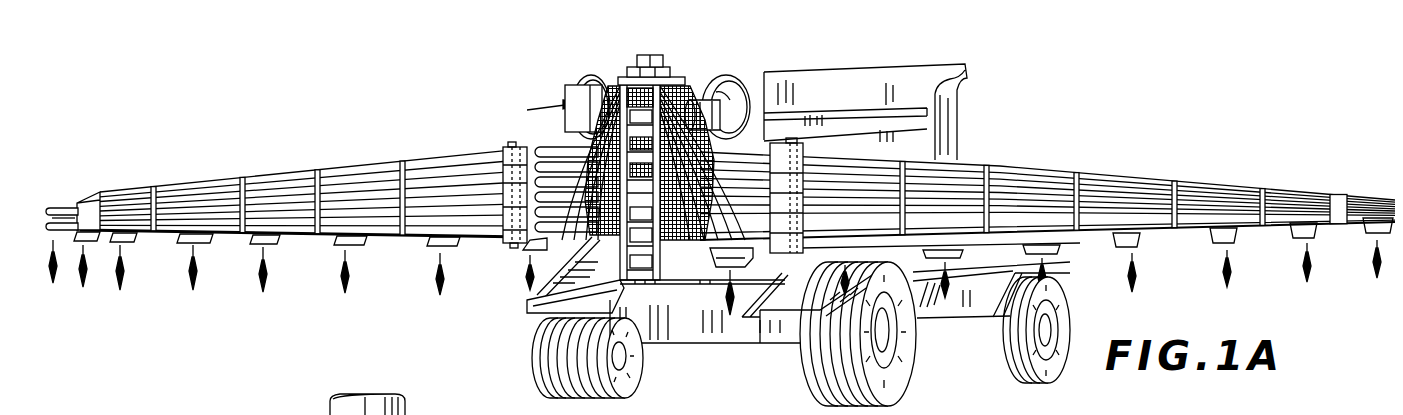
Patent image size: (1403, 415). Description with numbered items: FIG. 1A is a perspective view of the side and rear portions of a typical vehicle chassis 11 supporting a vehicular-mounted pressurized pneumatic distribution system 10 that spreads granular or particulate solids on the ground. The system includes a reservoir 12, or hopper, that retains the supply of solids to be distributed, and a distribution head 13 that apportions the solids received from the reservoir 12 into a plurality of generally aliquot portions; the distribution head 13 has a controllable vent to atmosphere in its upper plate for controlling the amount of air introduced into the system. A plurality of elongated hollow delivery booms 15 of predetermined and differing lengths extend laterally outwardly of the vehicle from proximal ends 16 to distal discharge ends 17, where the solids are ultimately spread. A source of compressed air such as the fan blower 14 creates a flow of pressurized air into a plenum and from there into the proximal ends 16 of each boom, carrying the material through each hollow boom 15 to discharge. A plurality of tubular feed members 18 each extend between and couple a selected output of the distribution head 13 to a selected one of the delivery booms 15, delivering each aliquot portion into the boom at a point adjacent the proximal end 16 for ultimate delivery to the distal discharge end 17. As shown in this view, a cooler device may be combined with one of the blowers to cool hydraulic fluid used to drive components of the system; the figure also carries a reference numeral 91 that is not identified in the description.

The pressurized pneumatic distribution system 10 is at (1126, 152).
The vehicle chassis 11 is at (972, 298).
The reservoir 12 is at (866, 125).
The distribution head 13 is at (688, 83).
The fan blower 14 is at (588, 75).
The elongated hollow delivery boom 15 is at (288, 170).
The proximal end 16 is at (587, 243).
The distal discharge end 17 is at (183, 245).
The tubular feed member 18 is at (600, 226).
The support bracket 91 is at (790, 262).